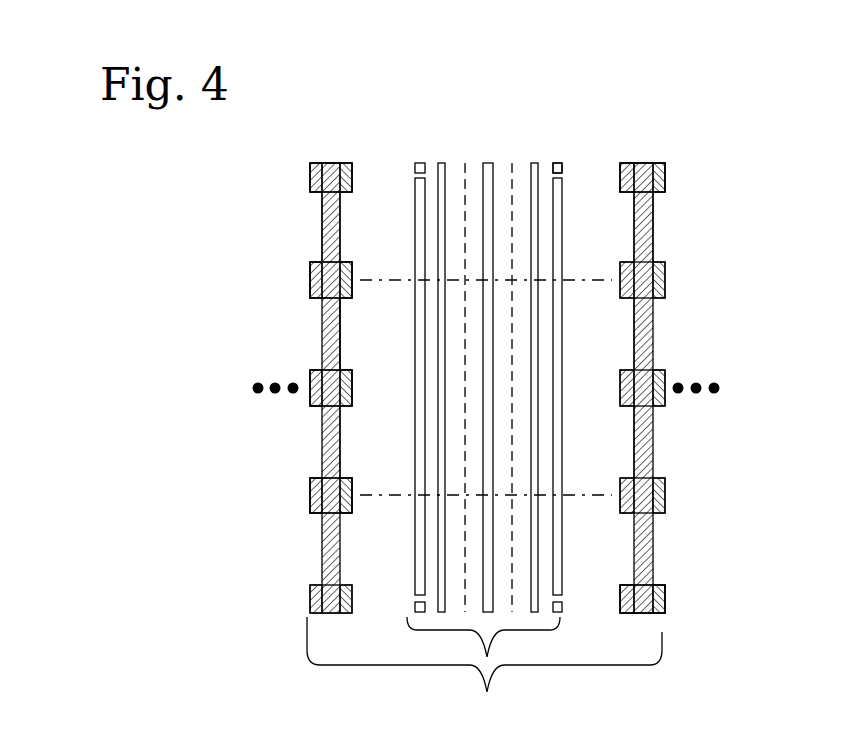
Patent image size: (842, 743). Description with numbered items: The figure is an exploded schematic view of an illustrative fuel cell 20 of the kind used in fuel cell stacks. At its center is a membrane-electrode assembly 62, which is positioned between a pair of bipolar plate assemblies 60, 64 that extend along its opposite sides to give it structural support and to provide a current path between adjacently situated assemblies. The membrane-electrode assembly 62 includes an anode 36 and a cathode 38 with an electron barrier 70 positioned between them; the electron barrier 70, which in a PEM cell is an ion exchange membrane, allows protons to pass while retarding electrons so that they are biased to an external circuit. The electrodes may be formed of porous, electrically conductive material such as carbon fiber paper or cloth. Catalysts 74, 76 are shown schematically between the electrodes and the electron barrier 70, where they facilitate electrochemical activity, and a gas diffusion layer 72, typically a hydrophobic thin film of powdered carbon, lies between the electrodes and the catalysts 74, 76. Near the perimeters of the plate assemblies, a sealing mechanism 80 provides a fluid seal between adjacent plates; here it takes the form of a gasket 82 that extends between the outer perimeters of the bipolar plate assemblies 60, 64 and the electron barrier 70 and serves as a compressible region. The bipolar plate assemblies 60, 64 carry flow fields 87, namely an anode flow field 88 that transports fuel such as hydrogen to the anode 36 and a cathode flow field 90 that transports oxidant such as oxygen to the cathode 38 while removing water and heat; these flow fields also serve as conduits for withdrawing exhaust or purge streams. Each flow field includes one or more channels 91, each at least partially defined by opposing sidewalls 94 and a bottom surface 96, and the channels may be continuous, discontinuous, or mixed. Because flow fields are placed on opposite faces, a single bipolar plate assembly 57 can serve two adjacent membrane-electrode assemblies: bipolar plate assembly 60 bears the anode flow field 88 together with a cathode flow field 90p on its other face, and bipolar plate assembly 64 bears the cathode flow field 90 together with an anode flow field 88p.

The fuel cell 20 is at (488, 692).
The anode 36 is at (412, 188).
The cathode 38 is at (563, 188).
The bipolar plate assembly 57 is at (270, 172).
The bipolar plate assembly 60 is at (305, 178).
The membrane-electrode assembly 62 is at (488, 657).
The bipolar plate assembly 64 is at (672, 180).
The electron barrier 70 is at (485, 163).
The gas diffusion layer 72 is at (440, 163).
The catalyst 74 is at (463, 500).
The catalyst 76 is at (512, 365).
The sealing mechanism 80 is at (563, 161).
The gasket 82 is at (552, 168).
The flow field 87 is at (612, 569).
The anode flow field 88 is at (349, 240).
The anode flow field 88p is at (670, 228).
The cathode flow field 90 is at (623, 222).
The cathode flow field 90p is at (303, 232).
The channel 91 is at (350, 344).
The sidewall 94 is at (350, 296).
The bottom surface 96 is at (340, 368).